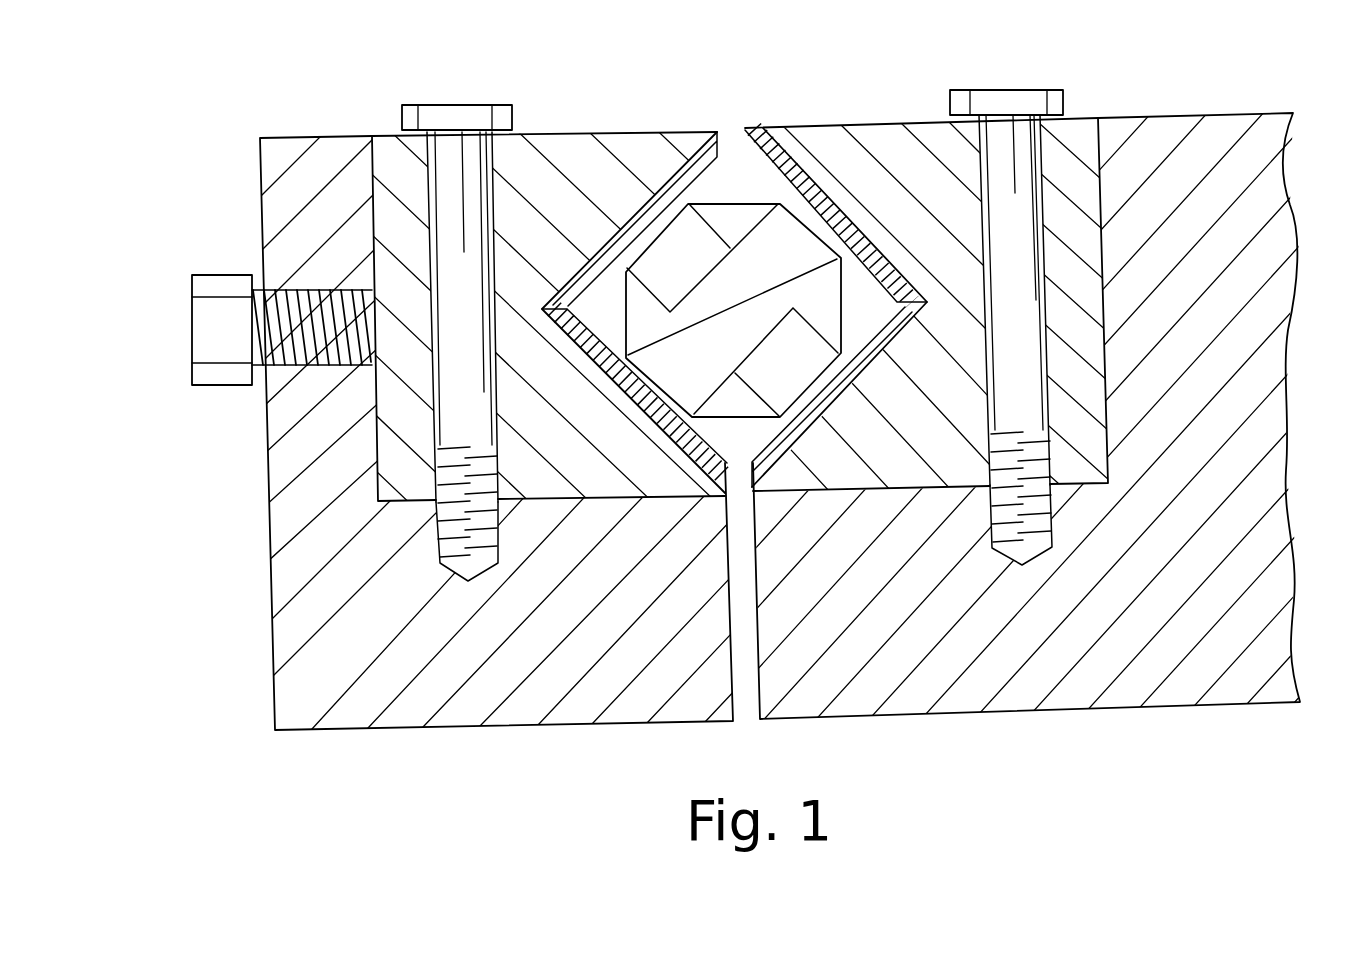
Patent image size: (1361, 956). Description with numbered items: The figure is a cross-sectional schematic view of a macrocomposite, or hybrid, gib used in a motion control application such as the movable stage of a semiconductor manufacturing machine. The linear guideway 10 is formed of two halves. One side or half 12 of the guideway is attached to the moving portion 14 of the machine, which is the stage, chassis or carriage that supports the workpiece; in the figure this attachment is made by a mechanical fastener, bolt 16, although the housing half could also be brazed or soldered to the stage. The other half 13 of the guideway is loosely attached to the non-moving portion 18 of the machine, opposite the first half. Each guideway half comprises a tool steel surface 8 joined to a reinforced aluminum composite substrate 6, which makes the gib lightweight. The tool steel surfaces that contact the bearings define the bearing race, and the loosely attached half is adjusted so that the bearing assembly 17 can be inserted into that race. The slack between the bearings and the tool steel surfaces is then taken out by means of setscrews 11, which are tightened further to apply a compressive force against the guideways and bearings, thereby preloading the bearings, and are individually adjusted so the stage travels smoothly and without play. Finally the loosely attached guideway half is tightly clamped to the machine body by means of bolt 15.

The reinforced aluminum composite substrate 6 is at (385, 147).
The tool steel surface 8 is at (687, 162).
The linear guideway 10 is at (562, 207).
The setscrews 11 is at (220, 287).
The guideway half 12 is at (872, 135).
The other guideway half 13 is at (522, 143).
The moving portion 14 is at (1257, 203).
The bolt 15 is at (430, 108).
The bolt 16 is at (1053, 95).
The bearing assembly 17 is at (733, 220).
The non-moving portion 18 is at (338, 657).